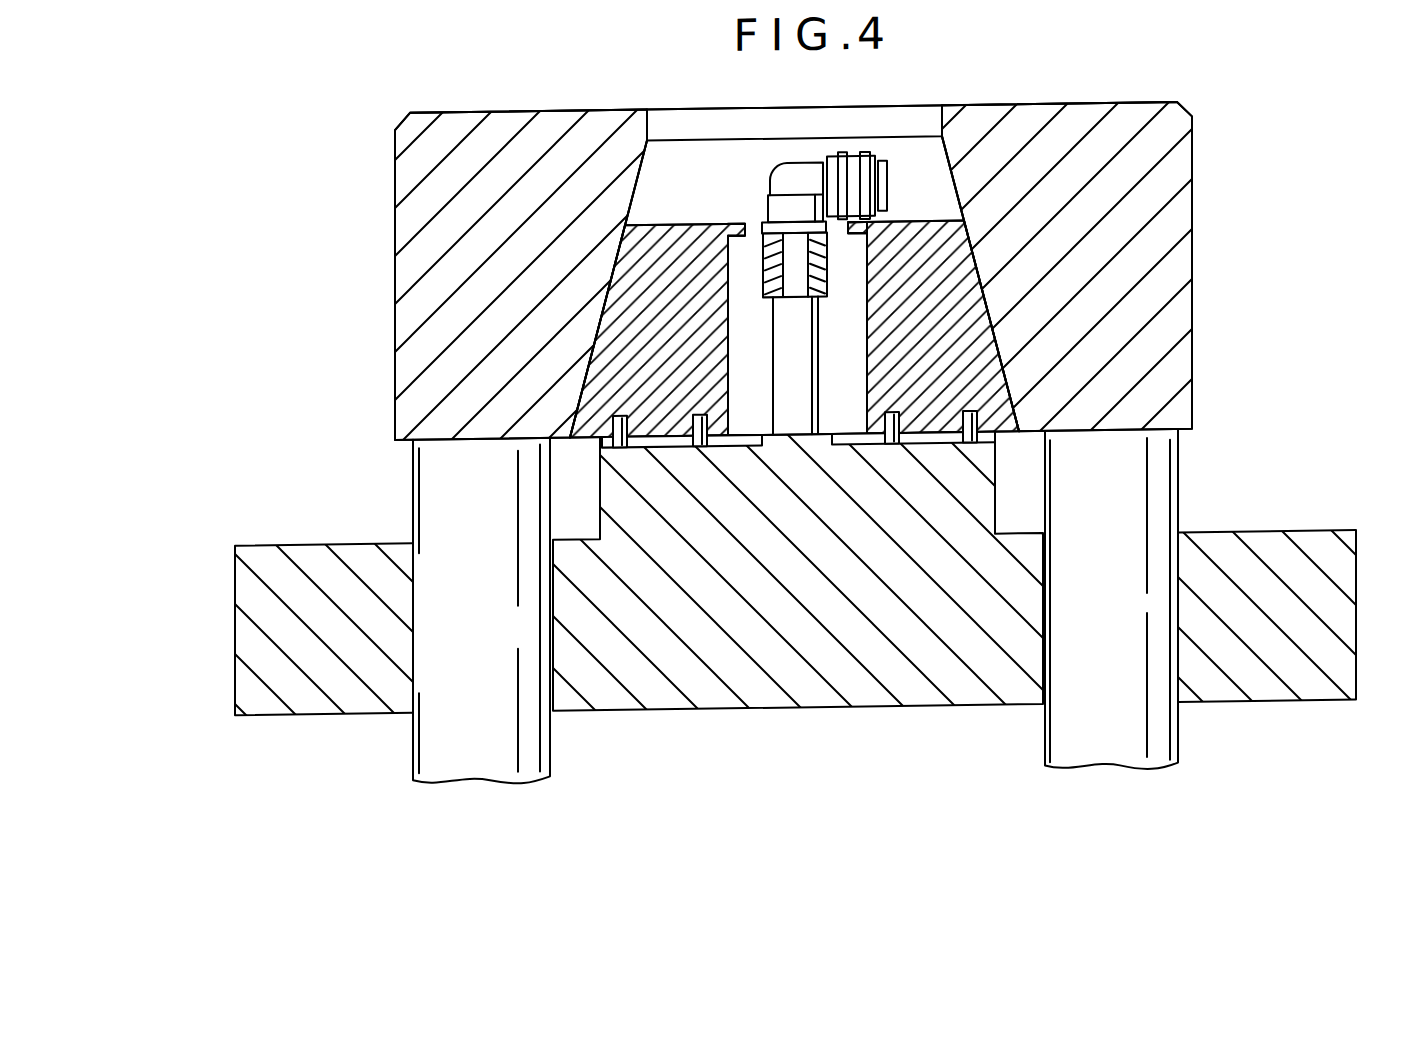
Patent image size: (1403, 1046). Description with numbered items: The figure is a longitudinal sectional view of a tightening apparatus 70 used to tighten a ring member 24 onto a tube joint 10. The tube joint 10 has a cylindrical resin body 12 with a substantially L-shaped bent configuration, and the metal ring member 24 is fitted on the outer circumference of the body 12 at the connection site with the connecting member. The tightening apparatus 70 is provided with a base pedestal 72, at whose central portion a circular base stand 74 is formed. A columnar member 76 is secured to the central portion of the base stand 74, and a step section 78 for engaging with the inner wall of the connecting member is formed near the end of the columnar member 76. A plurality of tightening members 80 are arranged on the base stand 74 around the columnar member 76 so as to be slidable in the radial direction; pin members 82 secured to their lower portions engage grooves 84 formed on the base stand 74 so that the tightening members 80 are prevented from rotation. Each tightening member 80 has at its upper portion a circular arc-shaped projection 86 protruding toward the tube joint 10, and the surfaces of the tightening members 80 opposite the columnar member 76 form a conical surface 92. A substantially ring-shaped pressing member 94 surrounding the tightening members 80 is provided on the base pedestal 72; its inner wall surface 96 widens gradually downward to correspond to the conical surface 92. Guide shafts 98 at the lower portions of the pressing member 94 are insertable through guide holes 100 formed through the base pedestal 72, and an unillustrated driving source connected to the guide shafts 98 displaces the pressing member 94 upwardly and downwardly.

The tube joint 10 is at (863, 143).
The body 12 is at (790, 156).
The ring member 24 is at (743, 226).
The tightening apparatus 70 is at (1196, 84).
The base pedestal 72 is at (1295, 574).
The base stand 74 is at (930, 512).
The columnar member 76 is at (795, 413).
The step section 78 is at (772, 302).
The tightening members 80 is at (623, 251).
The pin members 82 is at (620, 450).
The grooves 84 is at (700, 447).
The circular arc-shaped projection 86 is at (728, 216).
The conical surface 92 is at (598, 319).
The pressing member 94 is at (386, 172).
The inner wall surface 96 is at (593, 346).
The guide shafts 98 is at (462, 752).
The guide holes 100 is at (415, 659).